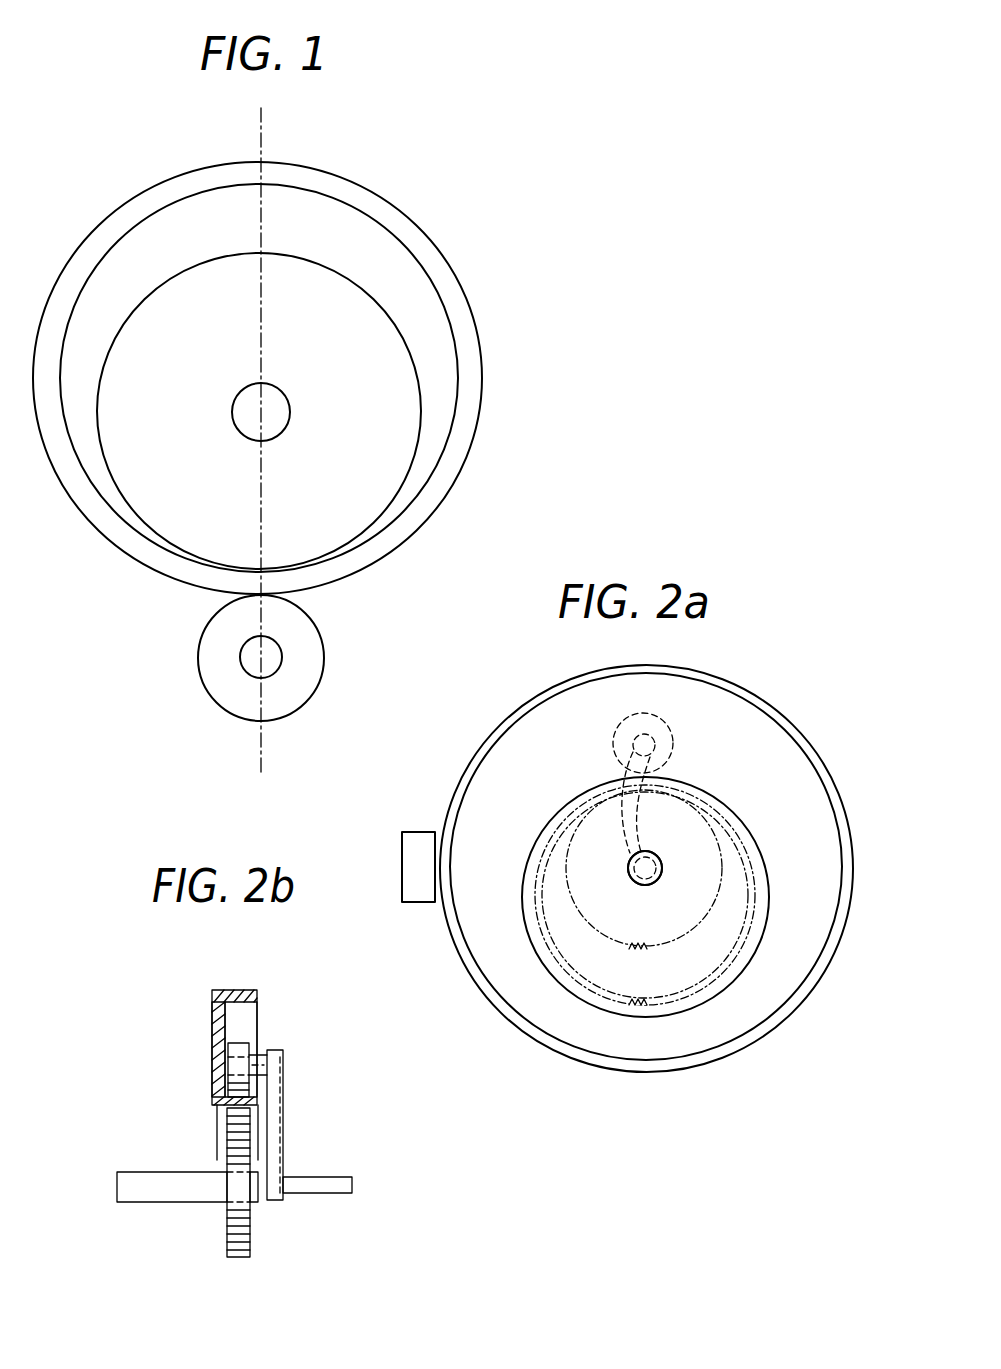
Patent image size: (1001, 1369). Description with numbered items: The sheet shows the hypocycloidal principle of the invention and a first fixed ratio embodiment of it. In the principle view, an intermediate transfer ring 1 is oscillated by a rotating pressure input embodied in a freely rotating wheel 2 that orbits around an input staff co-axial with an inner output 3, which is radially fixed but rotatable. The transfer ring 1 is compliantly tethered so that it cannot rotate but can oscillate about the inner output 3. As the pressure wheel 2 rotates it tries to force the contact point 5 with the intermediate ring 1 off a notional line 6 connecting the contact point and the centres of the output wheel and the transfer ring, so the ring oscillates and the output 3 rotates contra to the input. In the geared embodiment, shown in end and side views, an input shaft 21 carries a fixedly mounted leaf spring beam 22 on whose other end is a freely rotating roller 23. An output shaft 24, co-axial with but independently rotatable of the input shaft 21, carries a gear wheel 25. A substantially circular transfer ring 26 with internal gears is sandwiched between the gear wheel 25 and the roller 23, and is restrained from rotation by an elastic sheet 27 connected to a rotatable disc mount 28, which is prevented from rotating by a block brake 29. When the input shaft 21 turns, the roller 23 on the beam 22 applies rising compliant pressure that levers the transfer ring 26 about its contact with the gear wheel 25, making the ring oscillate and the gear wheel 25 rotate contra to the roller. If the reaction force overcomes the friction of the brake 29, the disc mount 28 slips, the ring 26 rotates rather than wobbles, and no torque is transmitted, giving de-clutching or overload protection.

In FIG. 1, the intermediate transfer ring 1 is at (430, 258).
In FIG. 1, the freely rotating wheel 2 is at (215, 683).
In FIG. 1, the inner output 3 is at (400, 418).
In FIG. 1, the contact point 5 is at (228, 597).
In FIG. 1, the notional line 6 is at (265, 121).
In FIG. 2A, the input shaft 21 is at (657, 862).
In FIG. 2B, the input shaft 21 is at (337, 1180).
In FIG. 2A, the leaf spring beam 22 is at (634, 762).
In FIG. 2B, the leaf spring beam 22 is at (275, 1115).
In FIG. 2A, the freely rotating roller 23 is at (668, 728).
In FIG. 2B, the freely rotating roller 23 is at (240, 1043).
In FIG. 2A, the output shaft 24 is at (645, 868).
In FIG. 2B, the output shaft 24 is at (126, 1190).
In FIG. 2A, the gear wheel 25 is at (594, 868).
In FIG. 2B, the gear wheel 25 is at (228, 1238).
In FIG. 2A, the transfer ring 26 is at (703, 790).
In FIG. 2B, the transfer ring 26 is at (217, 1107).
In FIG. 2A, the elastic sheet 27 is at (670, 1045).
In FIG. 2B, the elastic sheet 27 is at (222, 1033).
In FIG. 2A, the rotatable disc mount 28 is at (728, 1045).
In FIG. 2B, the rotatable disc mount 28 is at (238, 998).
In FIG. 2A, the block brake 29 is at (420, 838).